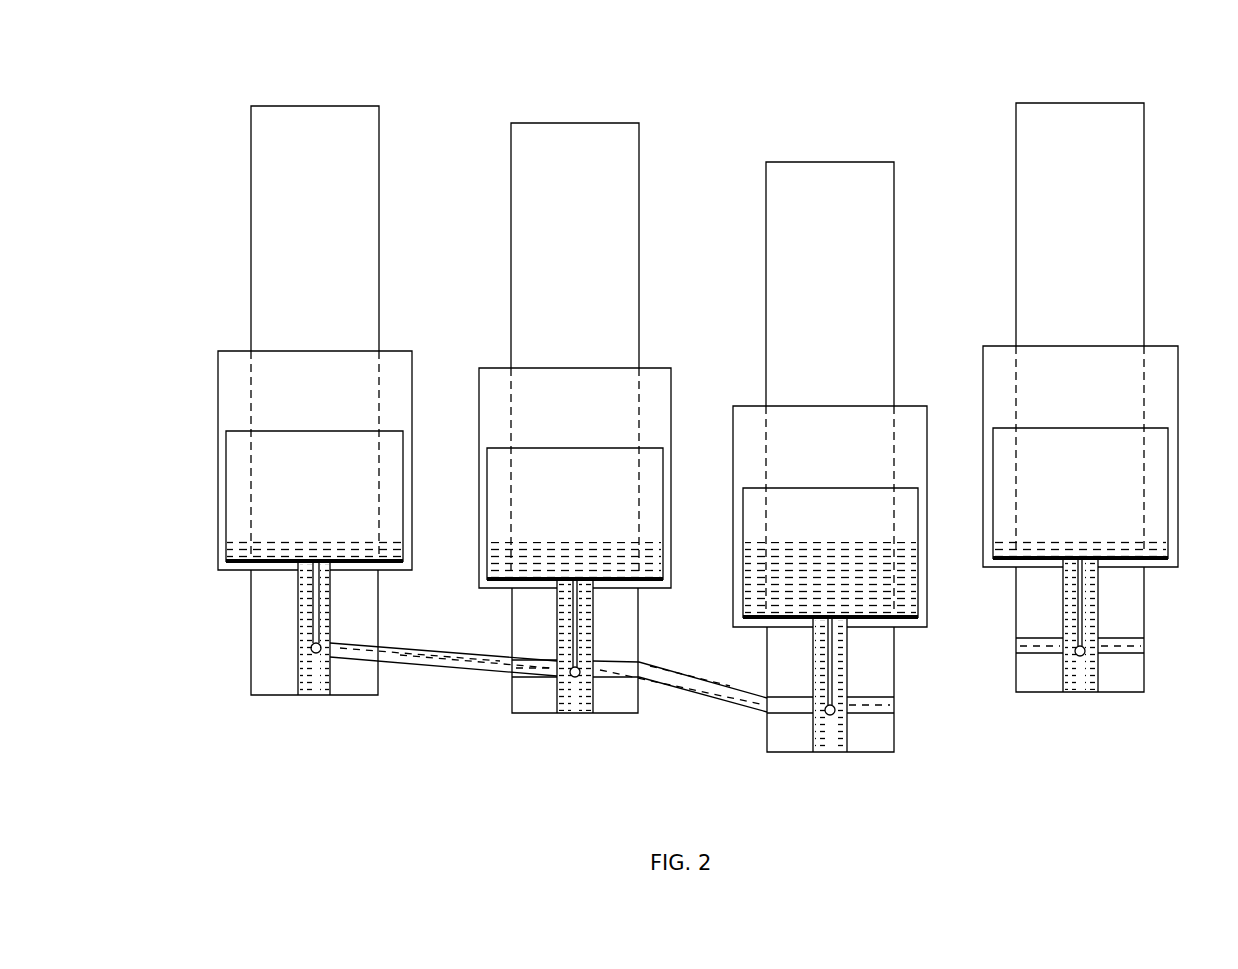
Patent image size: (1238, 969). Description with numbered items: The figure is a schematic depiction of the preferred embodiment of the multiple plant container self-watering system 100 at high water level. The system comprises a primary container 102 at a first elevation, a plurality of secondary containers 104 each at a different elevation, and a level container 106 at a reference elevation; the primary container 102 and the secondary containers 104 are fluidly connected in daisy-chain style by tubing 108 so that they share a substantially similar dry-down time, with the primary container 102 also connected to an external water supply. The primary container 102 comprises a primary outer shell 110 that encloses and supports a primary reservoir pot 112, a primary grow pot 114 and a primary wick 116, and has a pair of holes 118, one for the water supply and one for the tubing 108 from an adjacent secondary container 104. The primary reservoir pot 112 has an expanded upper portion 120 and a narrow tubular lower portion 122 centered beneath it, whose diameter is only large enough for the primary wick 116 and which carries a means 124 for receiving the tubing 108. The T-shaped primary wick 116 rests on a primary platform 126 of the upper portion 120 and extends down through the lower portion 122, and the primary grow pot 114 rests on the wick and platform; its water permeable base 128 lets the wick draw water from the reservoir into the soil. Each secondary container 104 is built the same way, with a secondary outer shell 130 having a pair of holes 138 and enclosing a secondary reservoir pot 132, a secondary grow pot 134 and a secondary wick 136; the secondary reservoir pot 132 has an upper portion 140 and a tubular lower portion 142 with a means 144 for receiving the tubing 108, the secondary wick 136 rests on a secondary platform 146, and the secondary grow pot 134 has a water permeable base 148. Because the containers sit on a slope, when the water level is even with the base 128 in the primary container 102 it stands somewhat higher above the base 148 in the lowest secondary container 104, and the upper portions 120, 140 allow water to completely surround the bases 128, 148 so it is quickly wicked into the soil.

The multiple plant container self-watering system 100 is at (729, 90).
The primary container 102 is at (324, 90).
The secondary containers 104 is at (579, 110).
The level container 106 is at (1103, 90).
The tubing 108 is at (487, 673).
The primary outer shell 110 is at (218, 373).
The primary reservoir pot 112 is at (226, 446).
The primary grow pot 114 is at (251, 226).
The primary wick 116 is at (315, 641).
The pair of holes 118 is at (378, 660).
The upper portion 120 is at (237, 492).
The lower portion 122 is at (299, 597).
The means for receiving the tubing 124 is at (330, 660).
The primary platform 126 is at (230, 557).
The water permeable base 128 is at (380, 563).
The secondary outer shell 130 is at (752, 405).
The secondary reservoir pot 132 is at (752, 487).
The secondary grow pot 134 is at (639, 226).
The secondary wick 136 is at (829, 682).
The pair of holes 138 is at (642, 679).
The upper portion 140 is at (752, 512).
The lower portion 142 is at (815, 632).
The means for receiving the tubing 144 is at (597, 678).
The secondary platform 146 is at (783, 618).
The water permeable base 148 is at (785, 608).